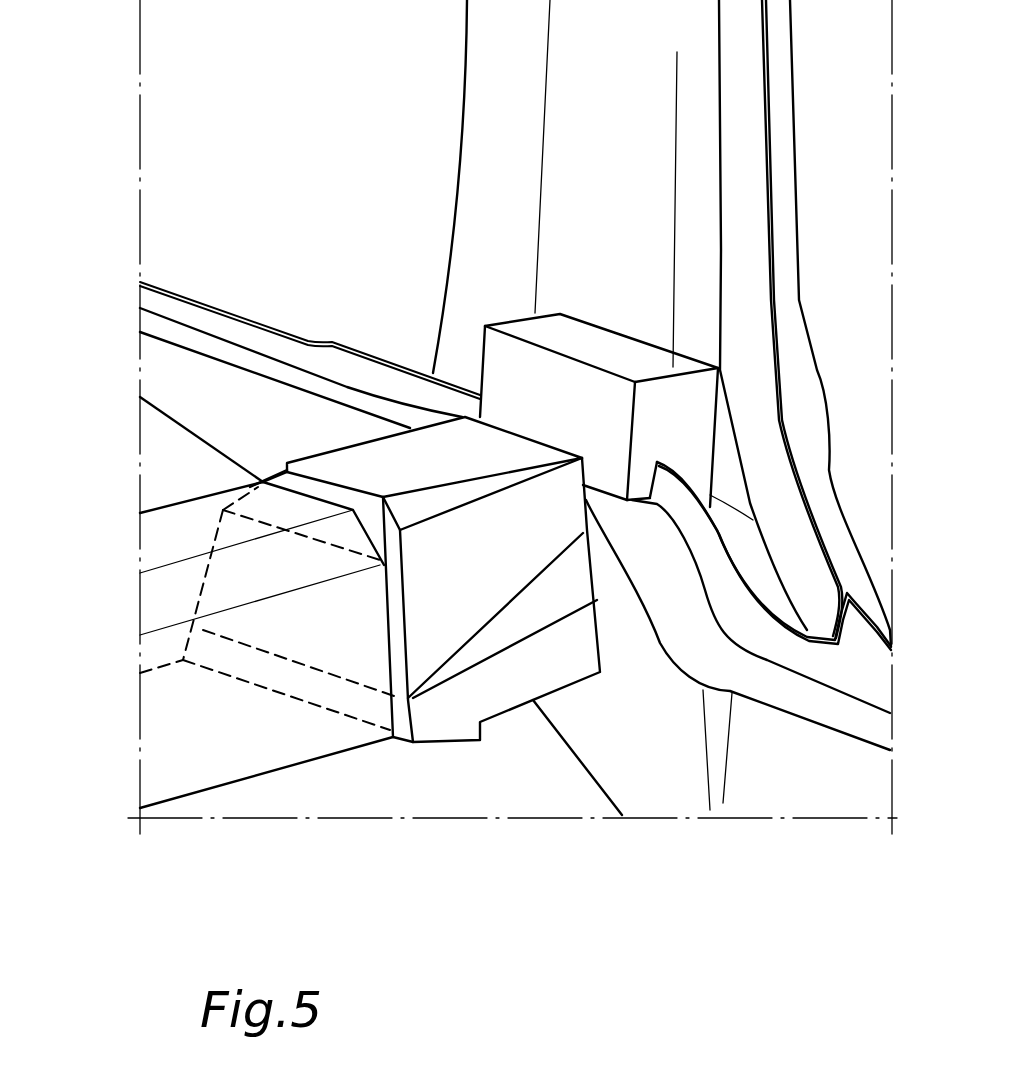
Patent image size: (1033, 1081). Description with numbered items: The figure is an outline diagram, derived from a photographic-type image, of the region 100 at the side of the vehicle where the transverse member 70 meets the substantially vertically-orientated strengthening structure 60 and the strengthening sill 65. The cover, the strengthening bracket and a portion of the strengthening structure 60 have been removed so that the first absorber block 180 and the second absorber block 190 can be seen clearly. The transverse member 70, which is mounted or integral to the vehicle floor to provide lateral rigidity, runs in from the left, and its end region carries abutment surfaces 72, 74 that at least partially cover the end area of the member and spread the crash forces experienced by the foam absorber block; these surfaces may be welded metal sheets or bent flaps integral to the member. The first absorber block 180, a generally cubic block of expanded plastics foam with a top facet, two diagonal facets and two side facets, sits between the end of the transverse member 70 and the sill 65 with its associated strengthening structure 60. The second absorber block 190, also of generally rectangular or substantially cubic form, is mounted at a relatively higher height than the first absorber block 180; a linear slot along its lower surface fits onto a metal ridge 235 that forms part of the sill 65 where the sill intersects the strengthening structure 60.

The vertically-orientated strengthening structure 60 is at (570, 83).
The strengthening sill 65 is at (207, 388).
The transverse member 70 is at (190, 738).
The abutment surface 72 is at (310, 690).
The abutment surface 74 is at (283, 508).
The region 100 is at (338, 308).
The first absorber block 180 is at (460, 610).
The second absorber block 190 is at (515, 362).
The metal ridge 235 is at (223, 328).